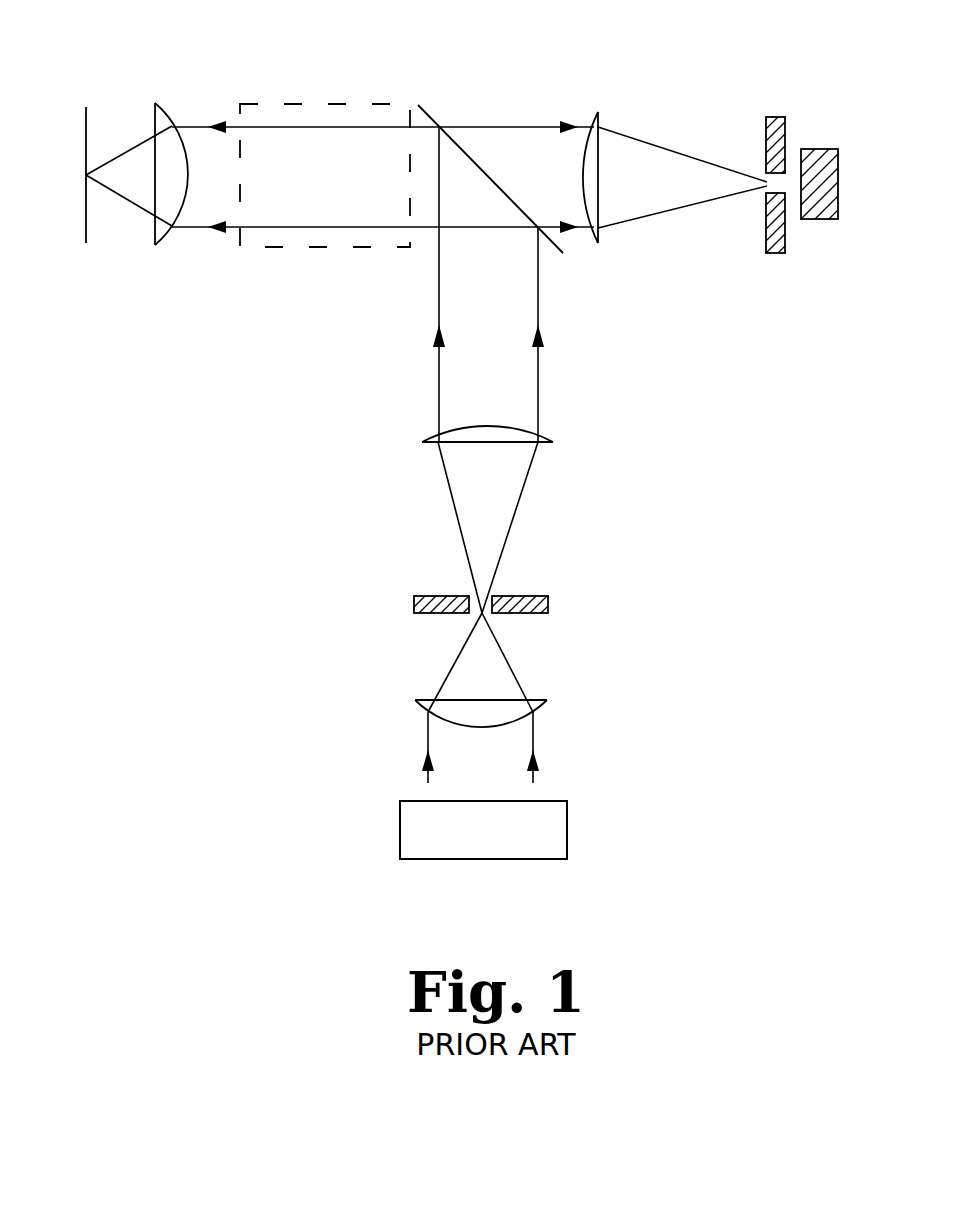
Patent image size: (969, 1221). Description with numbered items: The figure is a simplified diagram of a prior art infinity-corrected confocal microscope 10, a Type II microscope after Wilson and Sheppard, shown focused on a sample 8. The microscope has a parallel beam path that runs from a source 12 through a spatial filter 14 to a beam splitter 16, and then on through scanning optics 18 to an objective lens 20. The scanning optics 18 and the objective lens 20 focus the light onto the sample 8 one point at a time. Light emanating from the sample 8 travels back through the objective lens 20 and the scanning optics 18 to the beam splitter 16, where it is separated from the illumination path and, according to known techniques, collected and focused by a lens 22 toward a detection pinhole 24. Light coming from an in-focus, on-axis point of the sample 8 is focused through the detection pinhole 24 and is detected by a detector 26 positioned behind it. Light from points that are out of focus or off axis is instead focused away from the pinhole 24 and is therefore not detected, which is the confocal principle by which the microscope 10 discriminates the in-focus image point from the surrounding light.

The sample 8 is at (85, 108).
The confocal microscope 10 is at (178, 371).
The source 12 is at (400, 828).
The spatial filter 14 is at (407, 422).
The beam splitter 16 is at (552, 257).
The scanning optics 18 is at (357, 103).
The objective lens 20 is at (157, 107).
The focusing lens 22 is at (600, 118).
The detection pinhole 24 is at (783, 176).
The detector 26 is at (818, 149).